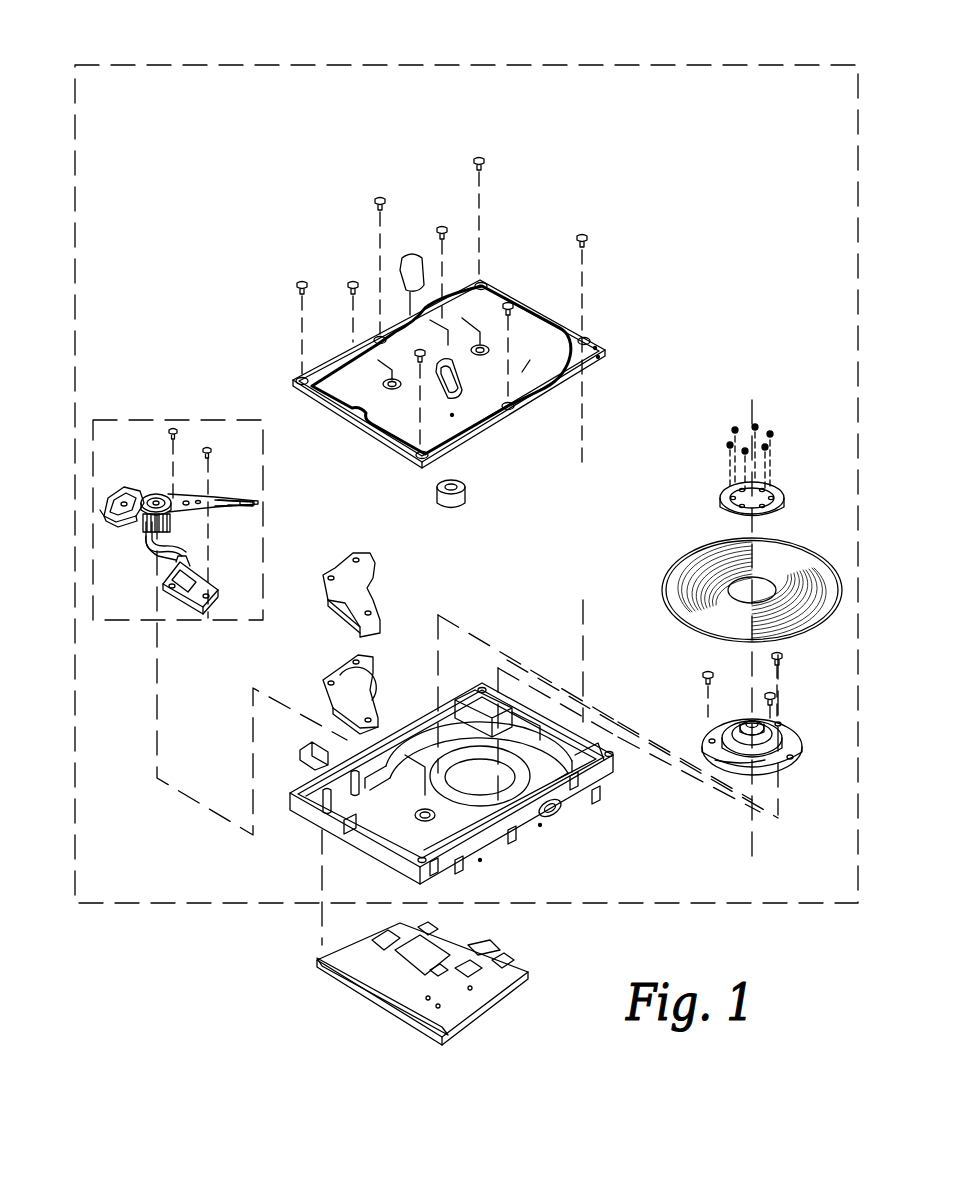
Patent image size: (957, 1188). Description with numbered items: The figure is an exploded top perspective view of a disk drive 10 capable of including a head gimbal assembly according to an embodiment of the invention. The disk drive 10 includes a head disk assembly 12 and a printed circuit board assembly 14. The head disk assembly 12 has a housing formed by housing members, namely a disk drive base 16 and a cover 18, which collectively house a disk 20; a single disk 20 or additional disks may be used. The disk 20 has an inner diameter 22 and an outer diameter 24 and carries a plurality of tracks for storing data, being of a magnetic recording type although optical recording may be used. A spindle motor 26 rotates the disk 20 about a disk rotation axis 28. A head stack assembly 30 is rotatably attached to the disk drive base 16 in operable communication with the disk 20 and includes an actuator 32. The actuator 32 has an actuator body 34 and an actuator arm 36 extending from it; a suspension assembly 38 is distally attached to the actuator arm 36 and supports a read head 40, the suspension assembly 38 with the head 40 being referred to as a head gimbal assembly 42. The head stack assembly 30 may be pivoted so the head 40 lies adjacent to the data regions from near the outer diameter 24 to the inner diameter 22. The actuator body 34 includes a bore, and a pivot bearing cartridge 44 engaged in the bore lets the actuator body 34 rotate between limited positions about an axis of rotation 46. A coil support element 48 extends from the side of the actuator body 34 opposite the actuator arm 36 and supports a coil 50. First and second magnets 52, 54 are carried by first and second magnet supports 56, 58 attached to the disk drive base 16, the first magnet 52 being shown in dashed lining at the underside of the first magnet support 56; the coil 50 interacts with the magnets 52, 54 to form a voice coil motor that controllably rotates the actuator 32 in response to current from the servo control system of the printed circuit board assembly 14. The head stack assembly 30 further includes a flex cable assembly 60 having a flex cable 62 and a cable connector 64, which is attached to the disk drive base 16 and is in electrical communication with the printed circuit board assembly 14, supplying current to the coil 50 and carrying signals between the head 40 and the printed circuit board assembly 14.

The disk drive 10 is at (243, 45).
The head disk assembly 12 is at (357, 65).
The printed circuit board assembly 14 is at (505, 985).
The disk drive base 16 is at (490, 850).
The cover 18 is at (532, 373).
The disk 20 is at (697, 556).
The inner diameter 22 is at (748, 595).
The outer diameter 24 is at (668, 620).
The spindle motor 26 is at (796, 779).
The disk rotation axis 28 is at (750, 838).
The head stack assembly 30 is at (191, 418).
The actuator 32 is at (157, 494).
The actuator body 34 is at (140, 496).
The actuator arm 36 is at (201, 497).
The suspension assembly 38 is at (226, 499).
The head 40 is at (255, 499).
The head gimbal assembly 42 is at (254, 513).
The pivot bearing cartridge 44 is at (157, 497).
The axis of rotation 46 is at (160, 657).
The coil support element 48 is at (104, 500).
The coil 50 is at (120, 492).
The first magnet 52 is at (383, 594).
The second magnet 54 is at (372, 678).
The first magnet support 56 is at (340, 596).
The second magnet support 58 is at (372, 712).
The flex cable assembly 60 is at (150, 556).
The flex cable 62 is at (146, 544).
The cable connector 64 is at (214, 592).